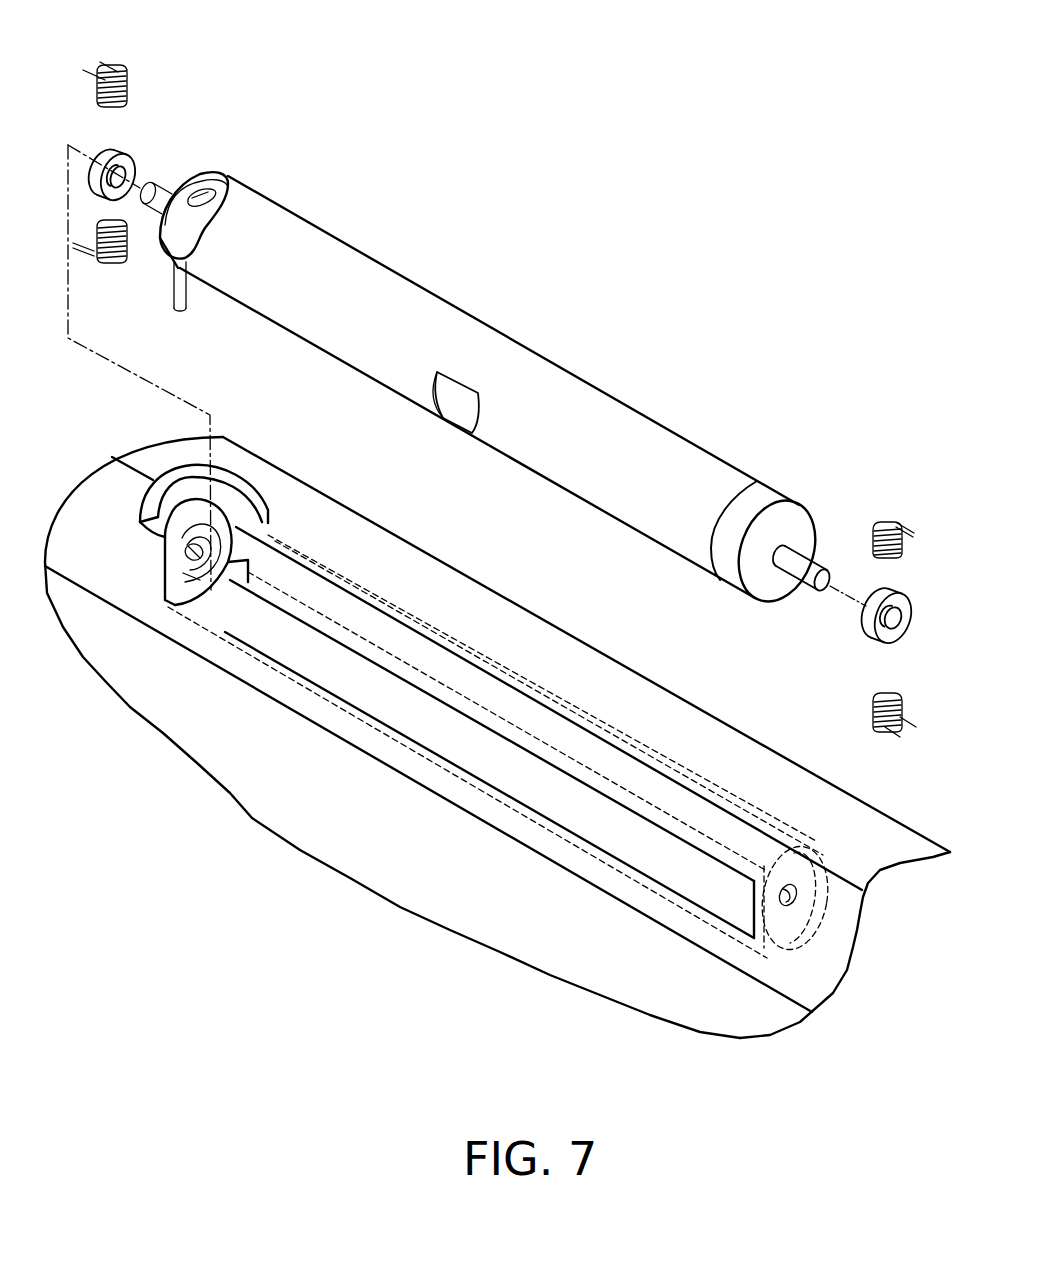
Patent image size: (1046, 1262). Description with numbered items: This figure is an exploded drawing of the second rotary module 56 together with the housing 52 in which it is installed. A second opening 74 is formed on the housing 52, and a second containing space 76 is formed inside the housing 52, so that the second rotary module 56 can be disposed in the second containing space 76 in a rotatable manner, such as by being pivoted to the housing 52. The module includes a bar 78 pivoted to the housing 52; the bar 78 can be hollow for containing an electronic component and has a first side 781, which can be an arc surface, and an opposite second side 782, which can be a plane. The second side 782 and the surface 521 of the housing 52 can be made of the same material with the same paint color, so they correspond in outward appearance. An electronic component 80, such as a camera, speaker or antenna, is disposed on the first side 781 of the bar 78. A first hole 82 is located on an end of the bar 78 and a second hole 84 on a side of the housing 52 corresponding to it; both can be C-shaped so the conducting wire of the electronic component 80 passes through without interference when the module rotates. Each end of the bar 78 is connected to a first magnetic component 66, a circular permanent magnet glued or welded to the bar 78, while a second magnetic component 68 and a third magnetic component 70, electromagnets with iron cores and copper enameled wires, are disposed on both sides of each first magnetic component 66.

The housing 52 is at (624, 682).
The surface of the housing 521 is at (837, 932).
The second rotary module 56 is at (560, 345).
The first magnetic component 66 is at (122, 149).
The second magnetic component 68 is at (120, 72).
The third magnetic component 70 is at (108, 263).
The second opening 74 is at (607, 852).
The second containing space 76 is at (707, 883).
The bar 78 is at (862, 405).
The first side 781 is at (757, 481).
The second side 782 is at (814, 564).
The electronic component 80 is at (460, 410).
The first hole 82 is at (213, 193).
The second hole 84 is at (191, 577).